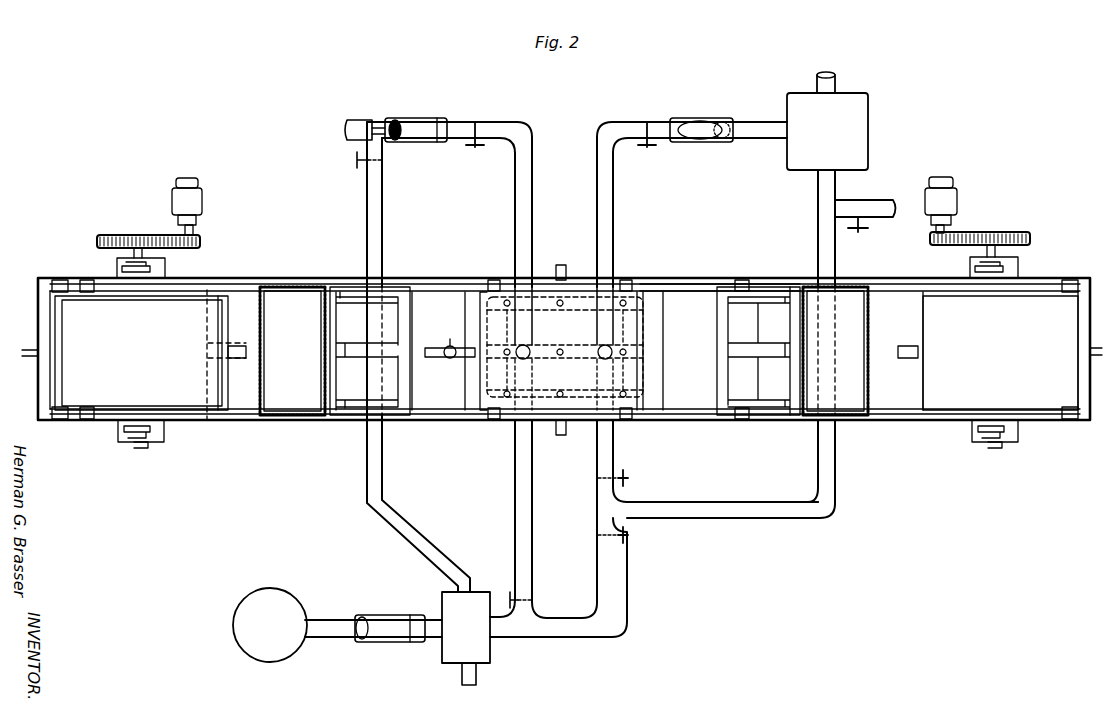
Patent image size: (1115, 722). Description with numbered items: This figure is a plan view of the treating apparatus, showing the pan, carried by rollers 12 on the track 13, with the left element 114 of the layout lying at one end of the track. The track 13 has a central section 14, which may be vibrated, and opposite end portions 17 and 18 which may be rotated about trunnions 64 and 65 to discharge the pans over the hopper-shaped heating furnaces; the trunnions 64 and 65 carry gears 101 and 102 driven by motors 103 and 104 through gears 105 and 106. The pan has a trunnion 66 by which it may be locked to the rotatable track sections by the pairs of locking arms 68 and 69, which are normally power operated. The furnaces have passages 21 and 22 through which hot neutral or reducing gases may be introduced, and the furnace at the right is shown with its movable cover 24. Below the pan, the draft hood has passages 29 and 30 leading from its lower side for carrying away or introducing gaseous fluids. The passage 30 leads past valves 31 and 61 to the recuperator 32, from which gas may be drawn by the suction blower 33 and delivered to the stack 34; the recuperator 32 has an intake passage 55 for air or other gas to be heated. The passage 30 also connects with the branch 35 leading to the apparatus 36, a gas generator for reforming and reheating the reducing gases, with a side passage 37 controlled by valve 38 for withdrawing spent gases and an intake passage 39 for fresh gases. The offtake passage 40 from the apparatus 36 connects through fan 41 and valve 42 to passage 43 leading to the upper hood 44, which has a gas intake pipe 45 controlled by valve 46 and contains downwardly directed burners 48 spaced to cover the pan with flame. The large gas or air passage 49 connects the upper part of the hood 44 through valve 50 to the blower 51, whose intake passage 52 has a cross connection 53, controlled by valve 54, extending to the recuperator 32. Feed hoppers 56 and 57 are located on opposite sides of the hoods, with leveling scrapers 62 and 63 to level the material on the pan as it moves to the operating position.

The left block 114 is at (62, 325).
The rollers 12 is at (627, 280).
The track 13 is at (428, 280).
The central section 14 is at (668, 283).
The end portion 17 is at (216, 422).
The end portion 18 is at (922, 420).
The passage 21 is at (238, 347).
The passage 22 is at (903, 346).
The movable cover 24 is at (1012, 353).
The passage 29 is at (515, 513).
The passage 30 is at (625, 482).
The valve 31 is at (626, 474).
The recuperator 32 is at (490, 657).
The suction blower 33 is at (378, 615).
The stack 34 is at (268, 594).
The branch 35 is at (740, 502).
The apparatus 36 is at (868, 118).
The side passage 37 is at (853, 202).
The valve 38 is at (840, 232).
The intake passage 39 is at (836, 80).
The offtake passage 40 is at (752, 125).
The fan 41 is at (703, 120).
The valve 42 is at (648, 147).
The passage 43 is at (597, 201).
The upper hood 44 is at (632, 368).
The gas intake pipe 45 is at (452, 358).
The valve 46 is at (450, 340).
The burners 48 is at (560, 345).
The gas or air passage 49 is at (532, 158).
The valve 50 is at (475, 148).
The blower 51 is at (412, 118).
The intake passage 52 is at (357, 120).
The cross connection 53 is at (382, 190).
The valve 54 is at (355, 157).
The intake passage 55 is at (462, 681).
The feed hopper 56 is at (862, 280).
The feed hopper 57 is at (268, 420).
The valve 61 is at (630, 537).
The leveling scraper 62 is at (722, 418).
The leveling scraper 63 is at (414, 420).
The trunnion 64 is at (142, 250).
The trunnion 65 is at (996, 247).
The trunnion 66 is at (562, 265).
The locking arms 68 is at (125, 268).
The locking arms 69 is at (984, 443).
The gear 101 is at (130, 234).
The gear 102 is at (992, 231).
The motor 103 is at (200, 196).
The motor 104 is at (952, 193).
The gear 105 is at (196, 230).
The gear 106 is at (936, 237).